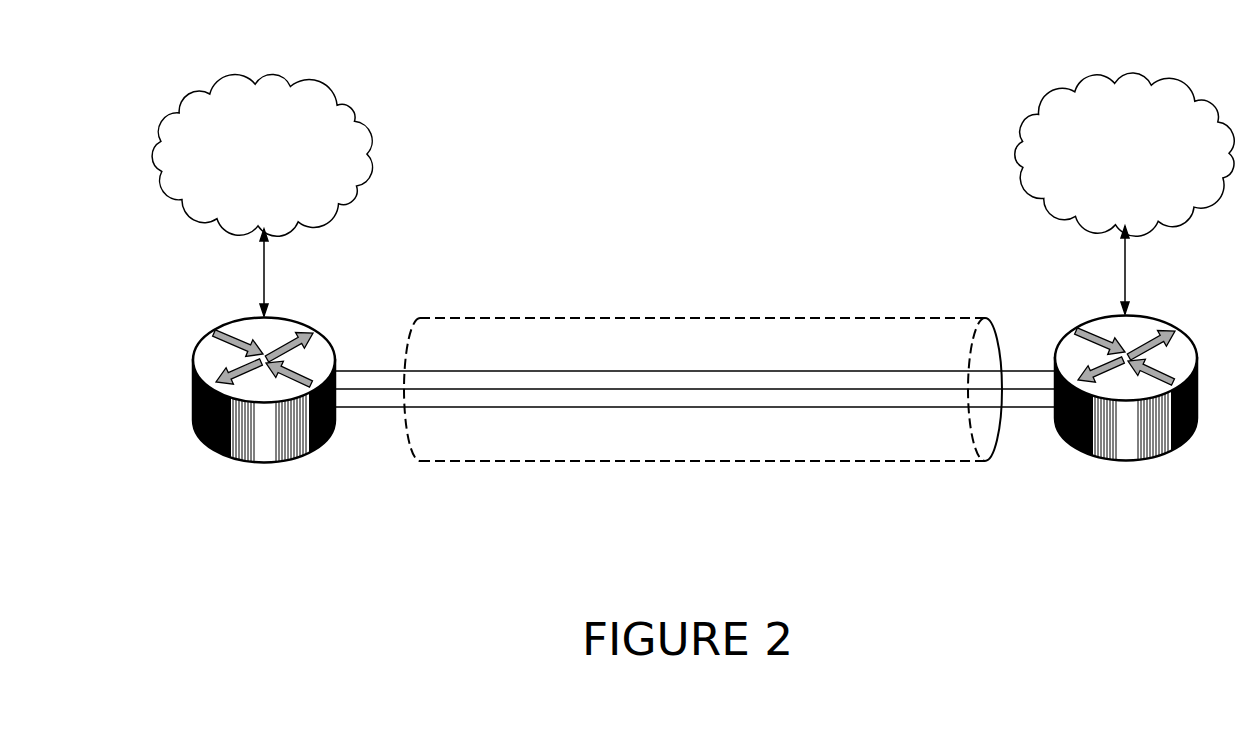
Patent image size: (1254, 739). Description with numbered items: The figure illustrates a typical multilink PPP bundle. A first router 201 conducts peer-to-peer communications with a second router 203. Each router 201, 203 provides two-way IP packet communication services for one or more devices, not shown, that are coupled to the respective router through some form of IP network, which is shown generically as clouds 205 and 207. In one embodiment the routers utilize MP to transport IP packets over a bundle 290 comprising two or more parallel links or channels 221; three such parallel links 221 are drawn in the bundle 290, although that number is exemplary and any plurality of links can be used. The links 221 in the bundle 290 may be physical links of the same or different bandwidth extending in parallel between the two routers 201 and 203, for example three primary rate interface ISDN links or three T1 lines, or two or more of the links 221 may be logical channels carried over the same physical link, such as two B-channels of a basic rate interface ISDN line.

The first router 201 is at (234, 390).
The second router 203 is at (1144, 379).
The IP network cloud 205 is at (262, 131).
The IP network cloud 207 is at (1124, 130).
The parallel links 221 is at (695, 475).
The bundle 290 is at (703, 359).